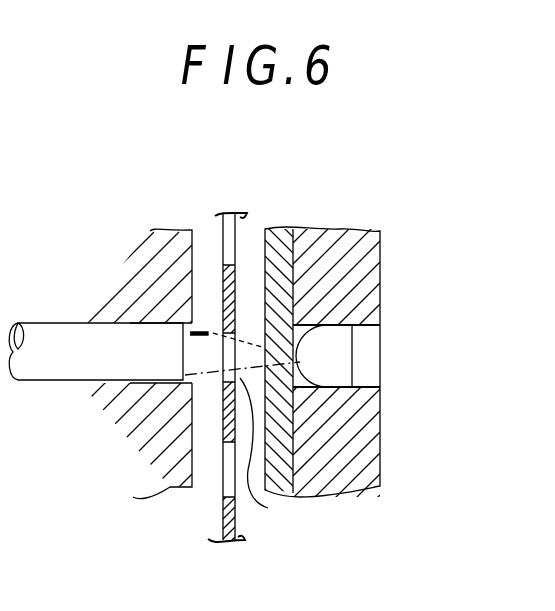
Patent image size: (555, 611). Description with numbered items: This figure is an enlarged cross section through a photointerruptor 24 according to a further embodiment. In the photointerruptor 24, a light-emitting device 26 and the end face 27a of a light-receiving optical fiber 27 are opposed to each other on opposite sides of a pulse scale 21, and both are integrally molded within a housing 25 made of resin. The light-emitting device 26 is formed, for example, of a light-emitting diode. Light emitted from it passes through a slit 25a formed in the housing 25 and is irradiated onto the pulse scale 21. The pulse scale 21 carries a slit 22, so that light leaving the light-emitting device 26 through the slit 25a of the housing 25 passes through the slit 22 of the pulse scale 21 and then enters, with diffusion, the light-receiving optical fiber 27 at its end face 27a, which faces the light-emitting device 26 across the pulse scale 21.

The pulse scale 21 is at (222, 232).
The slit 22 is at (305, 532).
The photointerruptor 24 is at (383, 267).
The housing 25 is at (345, 452).
The slit 25a is at (275, 350).
The light-emitting device 26 is at (372, 352).
The light-receiving optical fiber 27 is at (72, 365).
The end face 27a is at (190, 347).